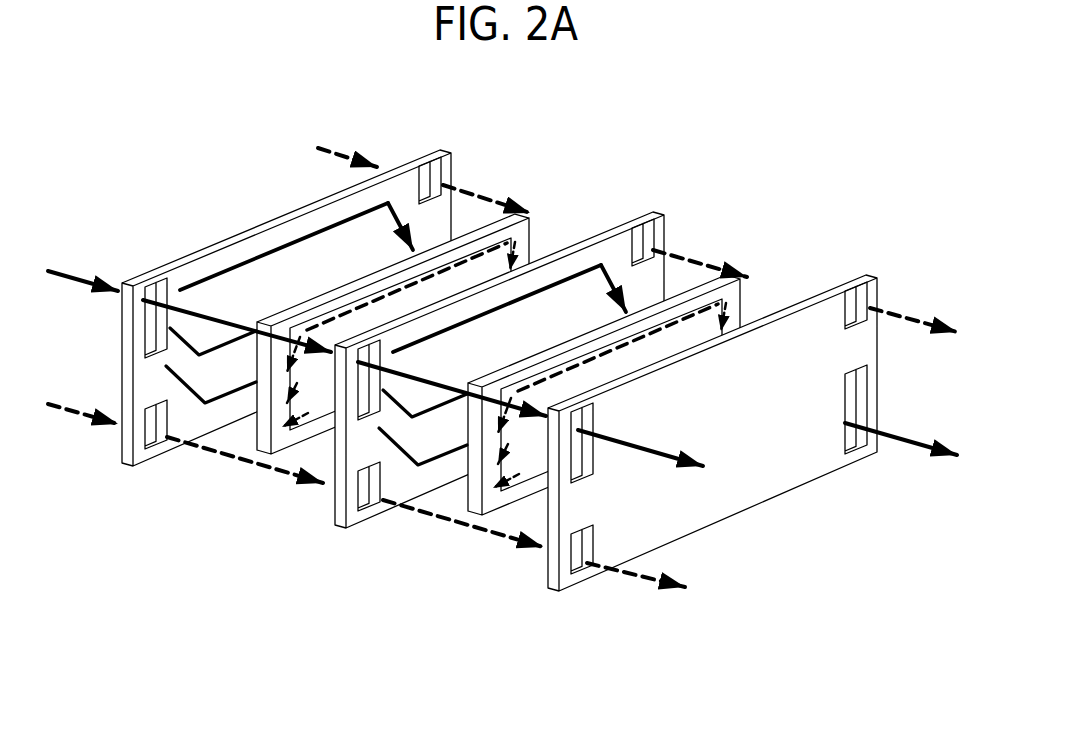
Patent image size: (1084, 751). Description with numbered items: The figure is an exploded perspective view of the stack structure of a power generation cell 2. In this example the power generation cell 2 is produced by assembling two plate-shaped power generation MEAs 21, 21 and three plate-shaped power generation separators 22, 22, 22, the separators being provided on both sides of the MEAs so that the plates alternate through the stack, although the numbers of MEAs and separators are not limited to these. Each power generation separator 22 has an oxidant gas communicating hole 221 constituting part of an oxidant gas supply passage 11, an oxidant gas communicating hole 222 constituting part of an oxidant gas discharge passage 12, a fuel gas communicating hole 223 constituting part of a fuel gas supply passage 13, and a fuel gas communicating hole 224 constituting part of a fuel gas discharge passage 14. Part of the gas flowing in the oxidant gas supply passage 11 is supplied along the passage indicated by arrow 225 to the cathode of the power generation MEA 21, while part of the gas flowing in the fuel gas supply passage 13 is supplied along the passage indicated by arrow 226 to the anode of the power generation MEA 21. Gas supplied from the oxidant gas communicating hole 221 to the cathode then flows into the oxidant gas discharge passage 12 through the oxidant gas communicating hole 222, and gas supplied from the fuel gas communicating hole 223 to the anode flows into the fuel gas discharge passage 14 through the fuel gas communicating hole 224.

The power generation cell 2 is at (650, 146).
The oxidant gas supply passage 11 is at (665, 453).
The oxidant gas discharge passage 12 is at (904, 440).
The fuel gas supply passage 13 is at (888, 317).
The fuel gas discharge passage 14 is at (651, 578).
The power generation MEA 21 is at (523, 213).
The power generation separator 22 is at (443, 148).
The oxidant gas communicating hole 221 is at (520, 477).
The oxidant gas communicating hole 222 is at (859, 440).
The fuel gas communicating hole 223 is at (862, 322).
The fuel gas communicating hole 224 is at (587, 555).
The arrow 225 is at (285, 249).
The arrow 226 is at (307, 418).